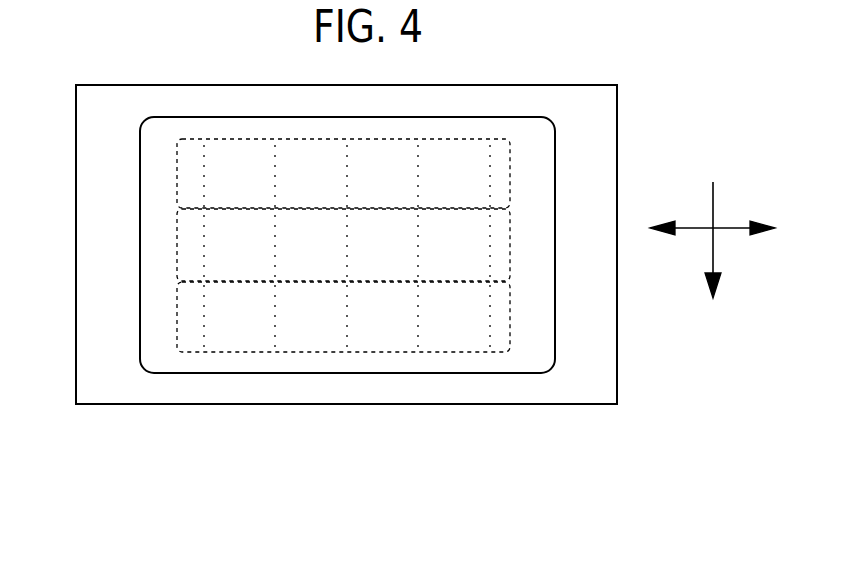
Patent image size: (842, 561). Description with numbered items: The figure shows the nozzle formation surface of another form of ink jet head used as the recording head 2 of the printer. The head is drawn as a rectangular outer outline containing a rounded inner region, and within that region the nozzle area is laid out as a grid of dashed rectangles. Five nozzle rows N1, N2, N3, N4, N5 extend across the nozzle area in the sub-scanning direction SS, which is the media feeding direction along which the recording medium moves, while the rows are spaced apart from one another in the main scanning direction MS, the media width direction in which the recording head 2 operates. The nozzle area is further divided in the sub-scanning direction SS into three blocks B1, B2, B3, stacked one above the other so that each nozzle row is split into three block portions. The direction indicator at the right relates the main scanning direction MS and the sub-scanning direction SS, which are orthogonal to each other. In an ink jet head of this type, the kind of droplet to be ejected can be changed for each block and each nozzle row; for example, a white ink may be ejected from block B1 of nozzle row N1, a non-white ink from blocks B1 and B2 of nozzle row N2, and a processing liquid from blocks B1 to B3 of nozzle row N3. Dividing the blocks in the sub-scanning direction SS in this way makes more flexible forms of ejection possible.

The recording head 2 is at (626, 110).
The block B1 is at (175, 192).
The block B2 is at (177, 238).
The block B3 is at (177, 315).
The nozzle row N1 is at (205, 350).
The nozzle row N2 is at (277, 350).
The nozzle row N3 is at (347, 350).
The nozzle row N4 is at (417, 350).
The nozzle row N5 is at (490, 350).
The main scanning direction MS is at (742, 225).
The sub-scanning direction SS is at (707, 249).